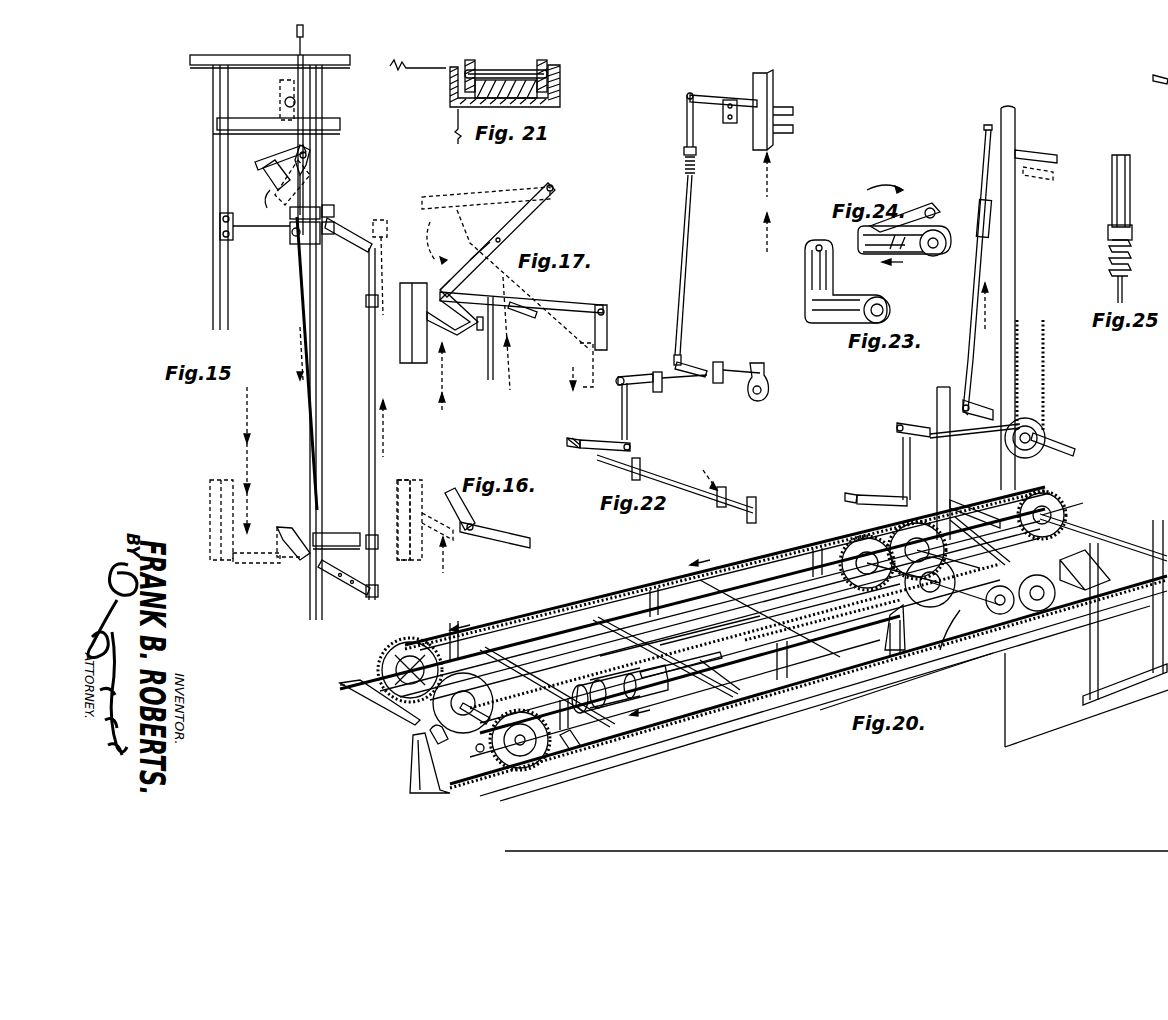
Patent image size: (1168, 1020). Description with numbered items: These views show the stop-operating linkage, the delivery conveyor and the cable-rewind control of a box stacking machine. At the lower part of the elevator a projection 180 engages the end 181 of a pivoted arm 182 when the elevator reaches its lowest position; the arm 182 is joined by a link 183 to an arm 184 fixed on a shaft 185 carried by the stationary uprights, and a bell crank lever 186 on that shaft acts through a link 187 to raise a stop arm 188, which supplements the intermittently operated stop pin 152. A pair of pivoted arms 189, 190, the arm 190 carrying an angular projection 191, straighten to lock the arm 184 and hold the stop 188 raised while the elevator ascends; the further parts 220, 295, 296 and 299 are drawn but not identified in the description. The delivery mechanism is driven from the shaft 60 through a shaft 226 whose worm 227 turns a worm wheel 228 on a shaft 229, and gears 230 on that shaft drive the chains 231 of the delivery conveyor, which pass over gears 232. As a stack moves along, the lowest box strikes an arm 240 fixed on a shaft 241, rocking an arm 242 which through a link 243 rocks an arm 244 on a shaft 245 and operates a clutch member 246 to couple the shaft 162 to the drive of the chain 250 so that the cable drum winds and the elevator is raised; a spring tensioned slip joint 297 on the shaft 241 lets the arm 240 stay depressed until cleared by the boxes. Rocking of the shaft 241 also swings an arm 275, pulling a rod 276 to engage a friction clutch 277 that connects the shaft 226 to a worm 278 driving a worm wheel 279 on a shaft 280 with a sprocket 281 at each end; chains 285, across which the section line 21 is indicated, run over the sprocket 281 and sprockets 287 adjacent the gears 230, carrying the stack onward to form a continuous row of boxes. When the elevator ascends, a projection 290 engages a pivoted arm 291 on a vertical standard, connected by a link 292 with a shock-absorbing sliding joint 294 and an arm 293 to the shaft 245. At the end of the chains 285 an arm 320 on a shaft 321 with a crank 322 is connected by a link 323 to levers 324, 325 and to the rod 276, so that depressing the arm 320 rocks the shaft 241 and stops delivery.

In FIG. 15, the stop pin 152 is at (296, 50).
In FIG. 15, the stop arm 188 is at (304, 108).
In FIG. 15, the pivoted arm 189 is at (280, 157).
In FIG. 17, the pivoted arm 189 is at (518, 222).
In FIG. 15, the pivoted arm 190 is at (268, 176).
In FIG. 17, the pivoted arm 190 is at (456, 282).
In FIG. 15, the link 187 is at (306, 183).
In FIG. 15, the shaft 185 is at (263, 226).
In FIG. 17, the shaft 185 is at (520, 314).
In FIG. 15, the bell crank lever 186 is at (293, 238).
In FIG. 15, the arm 184 is at (350, 236).
In FIG. 17, the arm 184 is at (583, 300).
In FIG. 15, the link 183 is at (372, 433).
In FIG. 15, the chain 220 is at (297, 300).
In FIG. 17, the chain 220 is at (491, 362).
In FIG. 15, the projection 180 is at (278, 547).
In FIG. 17, the projection 180 is at (458, 330).
In FIG. 16, the projection 180 is at (430, 510).
In FIG. 15, the end of pivoted arm 181 is at (276, 565).
In FIG. 16, the end of pivoted arm 181 is at (466, 513).
In FIG. 15, the pivoted arm 182 is at (300, 565).
In FIG. 16, the pivoted arm 182 is at (512, 535).
In FIG. 21, the chains 285 is at (549, 66).
In FIG. 20, the chains 285 is at (540, 604).
In FIG. 17, the angular projection 191 is at (478, 332).
In FIG. 22, the pivoted arm 291 is at (722, 95).
In FIG. 22, the projection 290 is at (783, 135).
In FIG. 22, the spring pressed sliding joint 294 is at (686, 128).
In FIG. 22, the spring 296 is at (697, 163).
In FIG. 22, the coupling 295 is at (684, 175).
In FIG. 22, the link 292 is at (688, 216).
In FIG. 20, the link 292 is at (975, 290).
In FIG. 22, the arm 293 is at (695, 368).
In FIG. 20, the arm 293 is at (980, 398).
In FIG. 22, the shaft 245 is at (745, 360).
In FIG. 20, the shaft 245 is at (960, 436).
In FIG. 22, the clutch member 246 is at (768, 383).
In FIG. 20, the clutch member 246 is at (1042, 436).
In FIG. 22, the arm 244 is at (652, 378).
In FIG. 20, the arm 244 is at (898, 425).
In FIG. 22, the link 243 is at (627, 415).
In FIG. 20, the link 243 is at (900, 462).
In FIG. 22, the arm 242 is at (608, 444).
In FIG. 20, the arm 242 is at (865, 493).
In FIG. 22, the spring tensioned slip joint 297 is at (596, 462).
In FIG. 22, the shaft 241 is at (665, 478).
In FIG. 20, the shaft 241 is at (1000, 575).
In FIG. 22, the arm 240 is at (712, 485).
In FIG. 20, the arm 240 is at (1043, 545).
In FIG. 25, the shaft 60 is at (1155, 78).
In FIG. 20, the rod 299 is at (983, 175).
In FIG. 20, the chain 250 is at (1048, 355).
In FIG. 20, the shaft 162 is at (1080, 450).
In FIG. 20, the arm 275 is at (940, 492).
In FIG. 20, the sprockets 287 is at (1063, 640).
In FIG. 20, the chains 231 is at (968, 498).
In FIG. 20, the gears 232 is at (1058, 503).
In FIG. 20, the shaft 229 is at (835, 528).
In FIG. 20, the section line 21 is at (520, 588).
In FIG. 20, the arm 320 is at (428, 640).
In FIG. 20, the sprocket 281 is at (385, 670).
In FIG. 20, the shaft 280 is at (395, 700).
In FIG. 20, the worm wheel 279 is at (435, 706).
In FIG. 20, the worm 278 is at (430, 735).
In FIG. 20, the shaft 321 is at (345, 720).
In FIG. 20, the crank 322 is at (478, 770).
In FIG. 20, the link 323 is at (575, 748).
In FIG. 20, the lever 325 is at (585, 655).
In FIG. 20, the lever 324 is at (715, 675).
In FIG. 20, the rod 276 is at (720, 612).
In FIG. 20, the clutch 277 is at (660, 655).
In FIG. 20, the shaft 226 is at (748, 645).
In FIG. 20, the gears 230 is at (870, 540).
In FIG. 20, the worm wheel 228 is at (858, 585).
In FIG. 20, the worm 227 is at (905, 625).